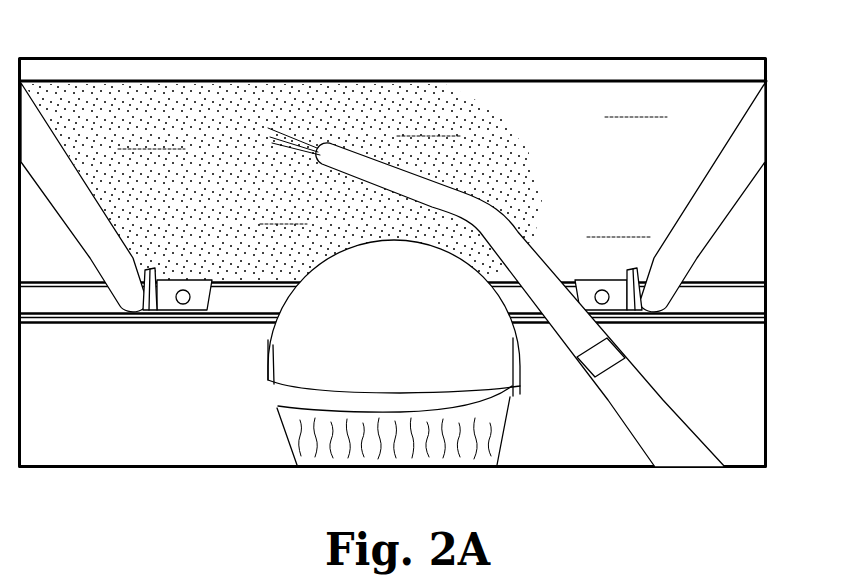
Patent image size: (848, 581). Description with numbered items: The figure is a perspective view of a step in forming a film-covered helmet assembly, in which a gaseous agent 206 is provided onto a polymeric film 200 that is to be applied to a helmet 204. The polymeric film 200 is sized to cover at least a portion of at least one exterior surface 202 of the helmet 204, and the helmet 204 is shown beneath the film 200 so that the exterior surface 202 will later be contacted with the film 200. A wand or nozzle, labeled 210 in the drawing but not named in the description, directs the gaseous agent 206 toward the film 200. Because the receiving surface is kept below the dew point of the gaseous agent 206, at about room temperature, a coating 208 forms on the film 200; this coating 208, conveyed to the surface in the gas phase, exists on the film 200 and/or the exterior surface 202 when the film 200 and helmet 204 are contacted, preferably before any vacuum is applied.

The polymeric film 200 is at (643, 188).
The exterior surface 202 is at (414, 333).
The helmet 204 is at (292, 353).
The gaseous agent 206 is at (279, 122).
The coating 208 is at (133, 112).
The spray wand 210 is at (655, 422).